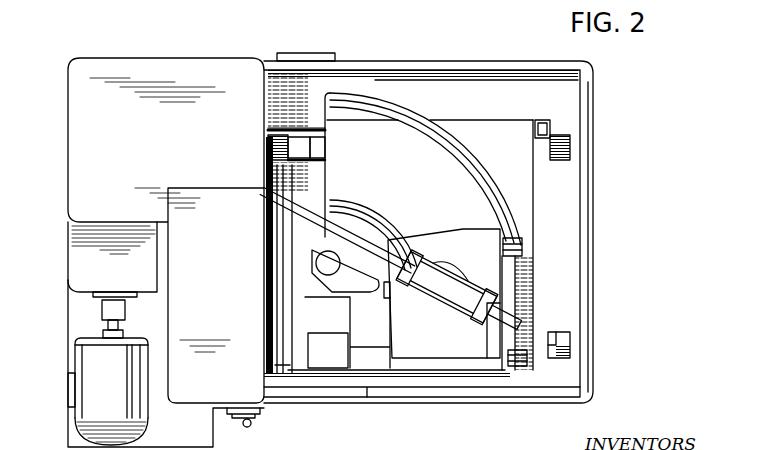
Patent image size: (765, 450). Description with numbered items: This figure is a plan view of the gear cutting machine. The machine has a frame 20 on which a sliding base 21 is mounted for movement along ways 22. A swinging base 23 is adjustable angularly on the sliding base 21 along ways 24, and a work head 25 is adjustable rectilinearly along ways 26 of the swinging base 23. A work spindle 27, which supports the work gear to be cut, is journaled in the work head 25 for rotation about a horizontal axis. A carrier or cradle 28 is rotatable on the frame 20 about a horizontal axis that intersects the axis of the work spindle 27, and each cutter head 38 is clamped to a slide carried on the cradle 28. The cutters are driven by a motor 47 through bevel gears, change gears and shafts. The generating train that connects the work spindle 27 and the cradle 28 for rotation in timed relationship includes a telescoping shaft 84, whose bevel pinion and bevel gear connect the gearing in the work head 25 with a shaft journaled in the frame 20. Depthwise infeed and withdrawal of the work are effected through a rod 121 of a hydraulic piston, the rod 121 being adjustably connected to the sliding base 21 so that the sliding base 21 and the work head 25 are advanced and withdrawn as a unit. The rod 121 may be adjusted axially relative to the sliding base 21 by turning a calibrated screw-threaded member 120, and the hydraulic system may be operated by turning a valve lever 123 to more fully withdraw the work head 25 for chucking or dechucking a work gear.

The frame 20 is at (492, 109).
The sliding base 21 is at (513, 148).
The ways 22 is at (566, 146).
The swinging base 23 is at (515, 283).
The ways 24 is at (383, 217).
The work head 25 is at (434, 340).
The ways 26 is at (517, 245).
The work spindle 27 is at (387, 291).
The cradle 28 is at (280, 366).
The cutter head 38 is at (368, 283).
The motor 47 is at (122, 395).
The telescoping shaft 84 is at (350, 237).
The calibrated screw-threaded member 120 is at (543, 123).
The rod 121 is at (303, 130).
The valve lever 123 is at (250, 427).